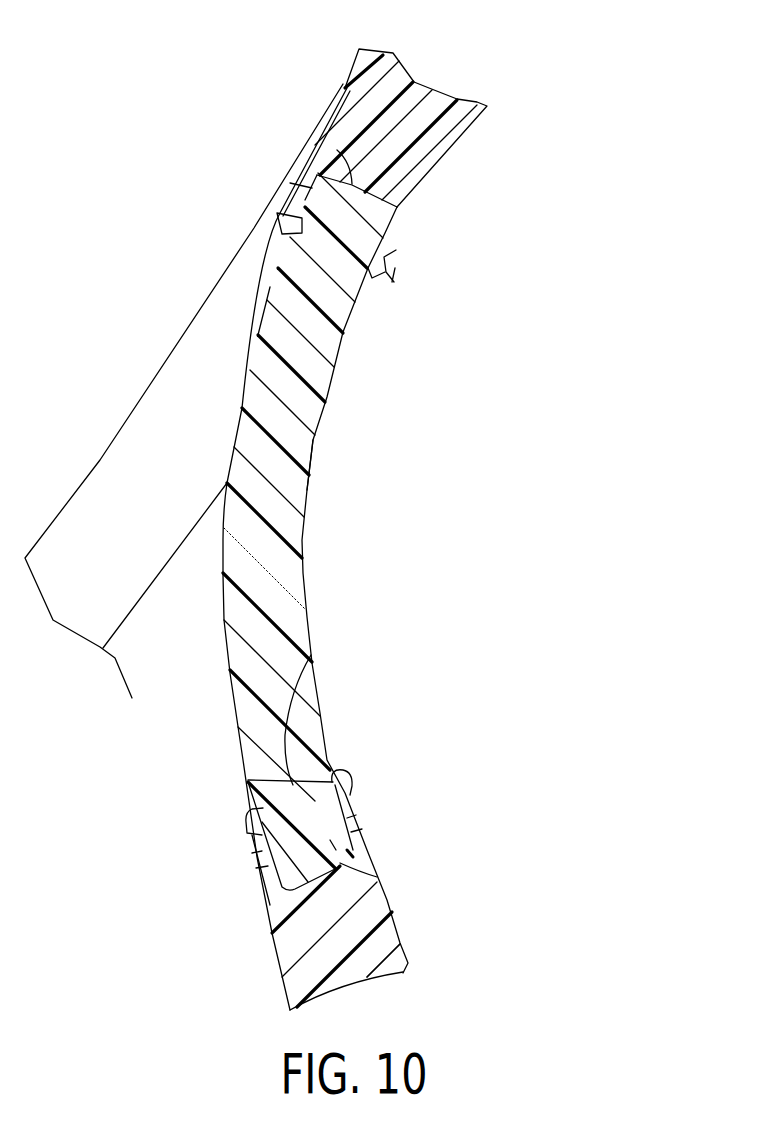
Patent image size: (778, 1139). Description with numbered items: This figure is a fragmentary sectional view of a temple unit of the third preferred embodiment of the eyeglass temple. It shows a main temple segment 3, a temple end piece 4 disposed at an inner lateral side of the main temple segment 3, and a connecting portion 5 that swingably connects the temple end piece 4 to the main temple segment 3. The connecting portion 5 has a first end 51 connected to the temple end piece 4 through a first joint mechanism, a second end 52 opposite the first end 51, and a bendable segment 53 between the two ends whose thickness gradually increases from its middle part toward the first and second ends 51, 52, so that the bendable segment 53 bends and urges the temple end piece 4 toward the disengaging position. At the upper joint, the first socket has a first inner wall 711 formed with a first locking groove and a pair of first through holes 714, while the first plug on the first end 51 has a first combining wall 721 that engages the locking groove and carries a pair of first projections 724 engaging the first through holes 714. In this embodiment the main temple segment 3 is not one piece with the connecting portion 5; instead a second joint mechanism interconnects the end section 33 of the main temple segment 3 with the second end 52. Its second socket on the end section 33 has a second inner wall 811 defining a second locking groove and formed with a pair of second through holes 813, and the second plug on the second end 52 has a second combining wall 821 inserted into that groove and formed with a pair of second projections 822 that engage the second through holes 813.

The main temple segment 3 is at (281, 988).
The end section 33 is at (367, 950).
The temple end piece 4 is at (346, 90).
The connecting portion 5 is at (302, 532).
The first end 51 is at (300, 302).
The second end 52 is at (311, 655).
The bendable segment 53 is at (302, 445).
The first inner wall 711 is at (403, 230).
The first through holes 714 is at (290, 185).
The first combining wall 721 is at (337, 150).
The first projections 724 is at (395, 272).
The second inner wall 811 is at (353, 835).
The second through holes 813 is at (362, 808).
The second combining wall 821 is at (352, 868).
The second projections 822 is at (333, 782).